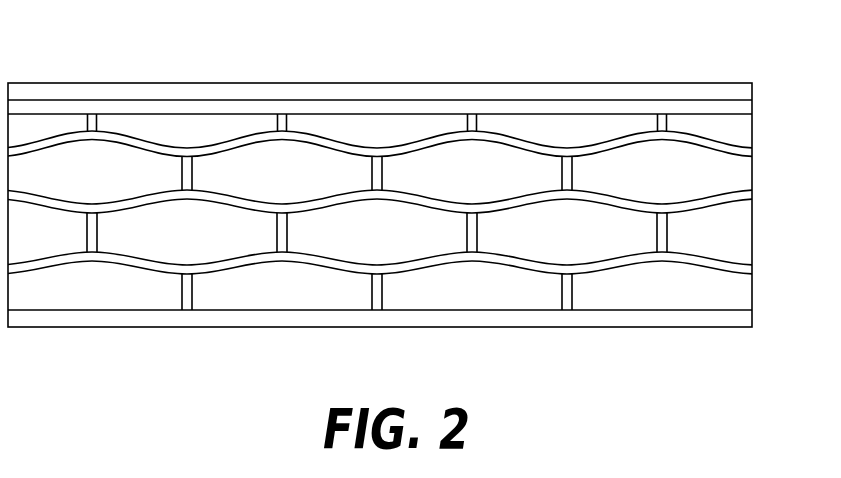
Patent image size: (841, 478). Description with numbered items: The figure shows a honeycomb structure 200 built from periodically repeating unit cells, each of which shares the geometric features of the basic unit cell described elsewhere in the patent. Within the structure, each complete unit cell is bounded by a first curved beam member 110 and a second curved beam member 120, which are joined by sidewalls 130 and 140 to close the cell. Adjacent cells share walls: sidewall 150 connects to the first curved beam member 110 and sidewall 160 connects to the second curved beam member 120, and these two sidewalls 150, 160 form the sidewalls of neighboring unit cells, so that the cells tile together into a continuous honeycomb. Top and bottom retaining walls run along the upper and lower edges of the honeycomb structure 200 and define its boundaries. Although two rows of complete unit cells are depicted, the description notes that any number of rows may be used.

The honeycomb structure 200 is at (102, 44).
The first curved beam member 110 is at (420, 195).
The second curved beam member 120 is at (355, 264).
The sidewall 130 is at (292, 235).
The sidewall 140 is at (479, 233).
The sidewall 150 is at (384, 172).
The sidewall 160 is at (383, 300).